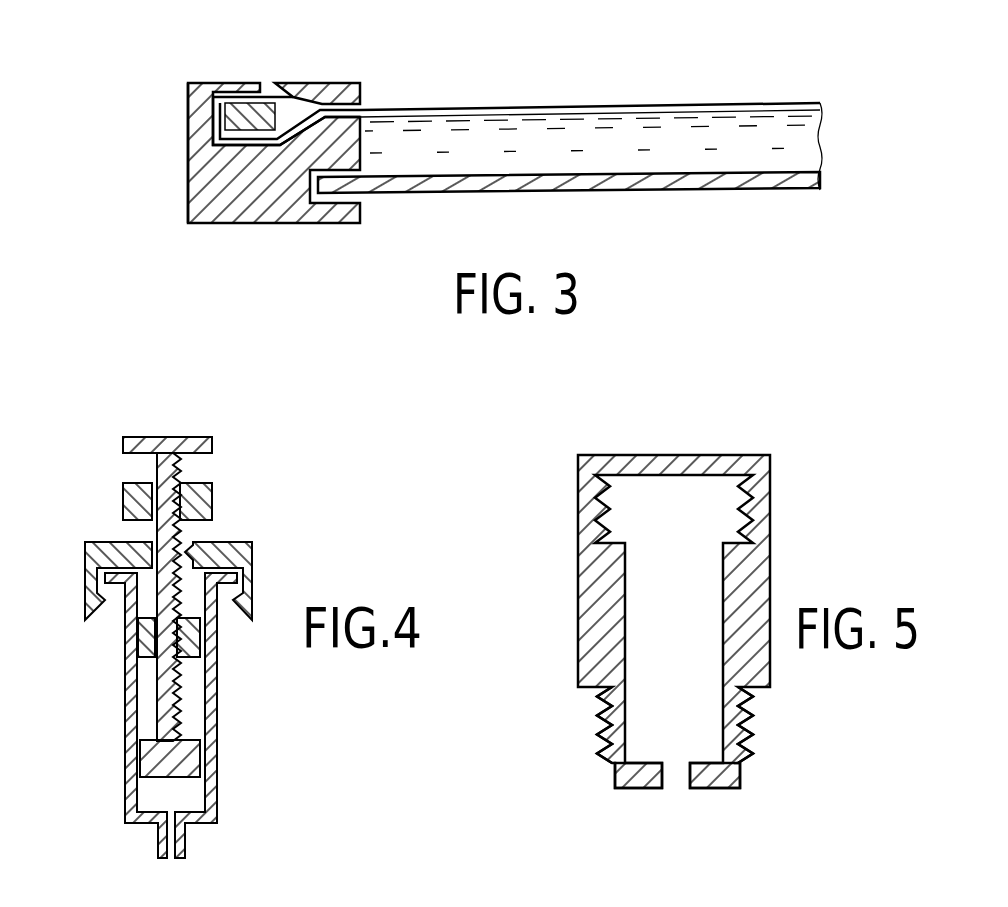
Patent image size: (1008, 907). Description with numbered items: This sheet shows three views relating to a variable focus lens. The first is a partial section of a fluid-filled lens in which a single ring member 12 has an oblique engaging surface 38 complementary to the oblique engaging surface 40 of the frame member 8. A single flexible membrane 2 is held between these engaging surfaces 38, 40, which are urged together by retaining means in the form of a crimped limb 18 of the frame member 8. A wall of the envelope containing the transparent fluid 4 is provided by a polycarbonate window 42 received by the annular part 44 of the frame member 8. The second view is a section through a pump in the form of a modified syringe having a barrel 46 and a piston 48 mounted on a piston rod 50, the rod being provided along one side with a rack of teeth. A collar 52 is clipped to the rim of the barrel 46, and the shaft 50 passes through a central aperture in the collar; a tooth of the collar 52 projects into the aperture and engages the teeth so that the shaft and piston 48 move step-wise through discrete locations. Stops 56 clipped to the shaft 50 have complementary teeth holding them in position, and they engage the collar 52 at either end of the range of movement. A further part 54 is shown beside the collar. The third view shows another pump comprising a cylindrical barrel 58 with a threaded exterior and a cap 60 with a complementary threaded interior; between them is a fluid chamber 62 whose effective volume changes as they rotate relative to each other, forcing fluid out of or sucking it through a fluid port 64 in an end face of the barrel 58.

In FIG. 3, the flexible membrane 2 is at (560, 110).
In FIG. 3, the transparent fluid 4 is at (678, 137).
In FIG. 3, the frame member 8 is at (222, 228).
In FIG. 3, the ring member 12 is at (342, 85).
In FIG. 3, the crimped limb 18 is at (197, 118).
In FIG. 3, the oblique engaging surface 38 is at (291, 97).
In FIG. 3, the oblique engaging surface 40 is at (297, 147).
In FIG. 3, the polycarbonate window 42 is at (533, 190).
In FIG. 3, the annular part 44 is at (200, 182).
In FIG. 4, the barrel 46 is at (127, 727).
In FIG. 4, the piston 48 is at (197, 758).
In FIG. 4, the piston rod 50 is at (160, 682).
In FIG. 4, the collar 52 is at (108, 553).
In FIG. 4, the right flange 54 is at (187, 553).
In FIG. 4, the stops 56 is at (203, 498).
In FIG. 5, the cylindrical barrel 58 is at (740, 707).
In FIG. 5, the cap 60 is at (733, 462).
In FIG. 5, the fluid chamber 62 is at (695, 607).
In FIG. 5, the fluid port 64 is at (677, 780).